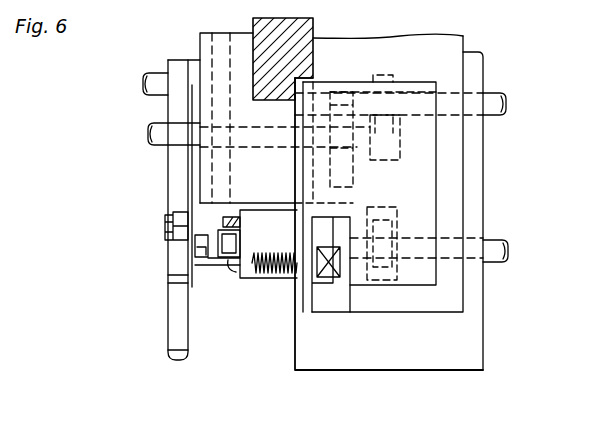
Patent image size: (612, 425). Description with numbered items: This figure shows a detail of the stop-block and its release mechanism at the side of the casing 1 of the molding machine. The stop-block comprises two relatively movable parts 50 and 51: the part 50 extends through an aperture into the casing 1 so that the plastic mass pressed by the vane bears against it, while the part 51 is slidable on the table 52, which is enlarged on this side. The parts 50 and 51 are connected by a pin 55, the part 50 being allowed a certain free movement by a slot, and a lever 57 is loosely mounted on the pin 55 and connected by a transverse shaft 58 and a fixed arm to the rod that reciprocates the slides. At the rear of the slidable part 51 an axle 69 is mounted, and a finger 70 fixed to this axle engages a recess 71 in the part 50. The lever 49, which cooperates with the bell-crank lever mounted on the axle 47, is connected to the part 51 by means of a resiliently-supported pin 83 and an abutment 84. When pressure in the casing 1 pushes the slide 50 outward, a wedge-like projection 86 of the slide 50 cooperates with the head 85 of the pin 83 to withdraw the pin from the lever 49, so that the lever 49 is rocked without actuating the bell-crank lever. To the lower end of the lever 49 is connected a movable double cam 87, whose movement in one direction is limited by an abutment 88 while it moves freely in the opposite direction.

The casing 1 is at (316, 39).
The axle 47 is at (143, 88).
The lever 49 is at (228, 240).
The stop-block part 50 is at (422, 325).
The slidable part 51 is at (299, 147).
The table 52 is at (399, 370).
The pin 55 is at (495, 93).
The lever 57 is at (437, 117).
The transverse shaft 58 is at (148, 141).
The axle 69 is at (495, 240).
The finger 70 is at (375, 230).
The recess 71 is at (416, 234).
The resiliently-supported pin 83 is at (268, 280).
The abutment 84 is at (237, 213).
The head 85 is at (340, 265).
The wedge-like projection 86 is at (330, 264).
The movable double cam 87 is at (165, 215).
The abutment 88 is at (165, 242).